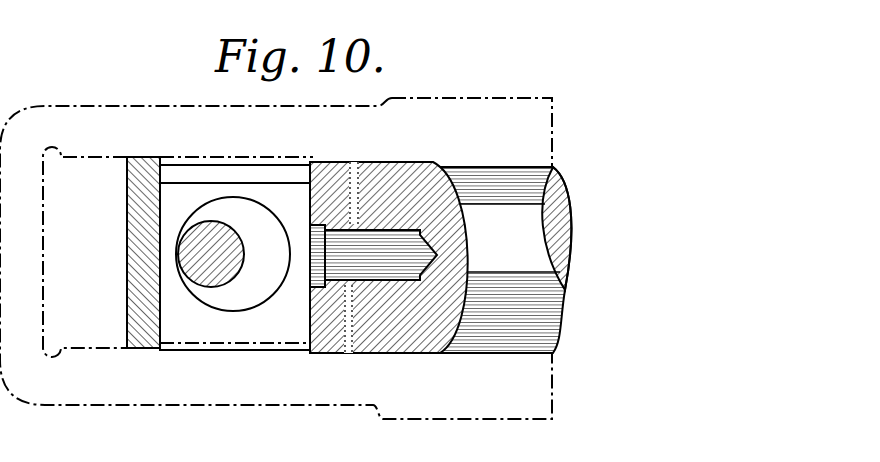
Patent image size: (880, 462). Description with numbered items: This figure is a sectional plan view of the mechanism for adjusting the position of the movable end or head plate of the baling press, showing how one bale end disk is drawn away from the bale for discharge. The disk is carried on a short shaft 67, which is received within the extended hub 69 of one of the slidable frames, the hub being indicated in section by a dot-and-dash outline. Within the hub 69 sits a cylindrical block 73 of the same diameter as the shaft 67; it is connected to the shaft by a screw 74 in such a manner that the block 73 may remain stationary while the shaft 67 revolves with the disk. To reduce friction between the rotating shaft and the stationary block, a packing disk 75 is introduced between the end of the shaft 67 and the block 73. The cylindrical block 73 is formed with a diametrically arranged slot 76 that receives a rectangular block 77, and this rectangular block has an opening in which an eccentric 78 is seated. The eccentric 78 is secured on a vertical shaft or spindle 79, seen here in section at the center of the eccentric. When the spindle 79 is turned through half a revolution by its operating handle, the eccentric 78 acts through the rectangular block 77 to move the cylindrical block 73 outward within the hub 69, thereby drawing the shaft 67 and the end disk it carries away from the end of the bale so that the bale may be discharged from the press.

The shaft 67 is at (500, 260).
The extended hub 69 is at (478, 101).
The cylindrical block 73 is at (146, 332).
The screw 74 is at (355, 260).
The packing disk 75 is at (353, 163).
The slot 76 is at (197, 176).
The rectangular block 77 is at (243, 332).
The eccentric 78 is at (233, 254).
The vertical shaft or spindle 79 is at (204, 268).